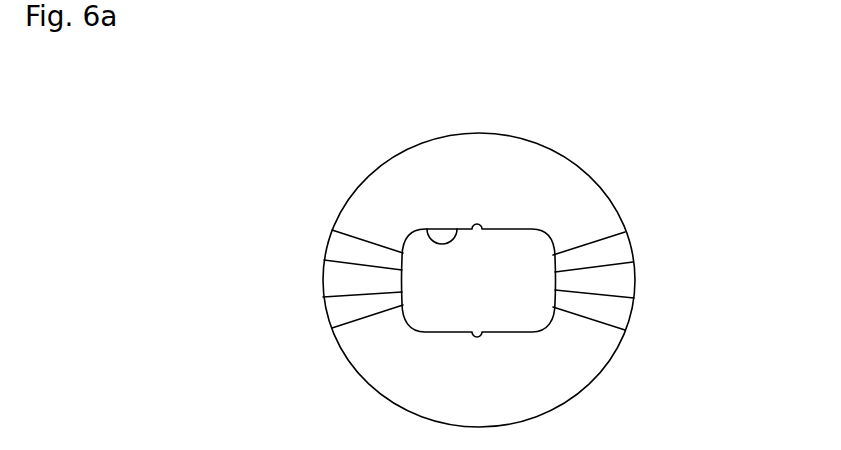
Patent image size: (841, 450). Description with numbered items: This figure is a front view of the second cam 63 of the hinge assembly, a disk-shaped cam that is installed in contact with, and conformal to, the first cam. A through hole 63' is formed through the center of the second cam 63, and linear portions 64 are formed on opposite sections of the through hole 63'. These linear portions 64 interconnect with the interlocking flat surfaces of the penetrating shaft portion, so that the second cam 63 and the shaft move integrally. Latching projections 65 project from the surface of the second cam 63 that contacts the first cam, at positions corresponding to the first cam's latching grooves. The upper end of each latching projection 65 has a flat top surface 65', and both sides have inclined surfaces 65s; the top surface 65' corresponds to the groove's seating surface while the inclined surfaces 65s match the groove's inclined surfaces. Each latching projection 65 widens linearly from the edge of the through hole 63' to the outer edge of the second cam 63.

The second cam 63 is at (497, 240).
The through hole 63' is at (479, 280).
The linear portions 64 is at (427, 229).
The latching projections 65 is at (464, 281).
The inclined surfaces 65s is at (338, 250).
The flat top surface 65' is at (307, 288).